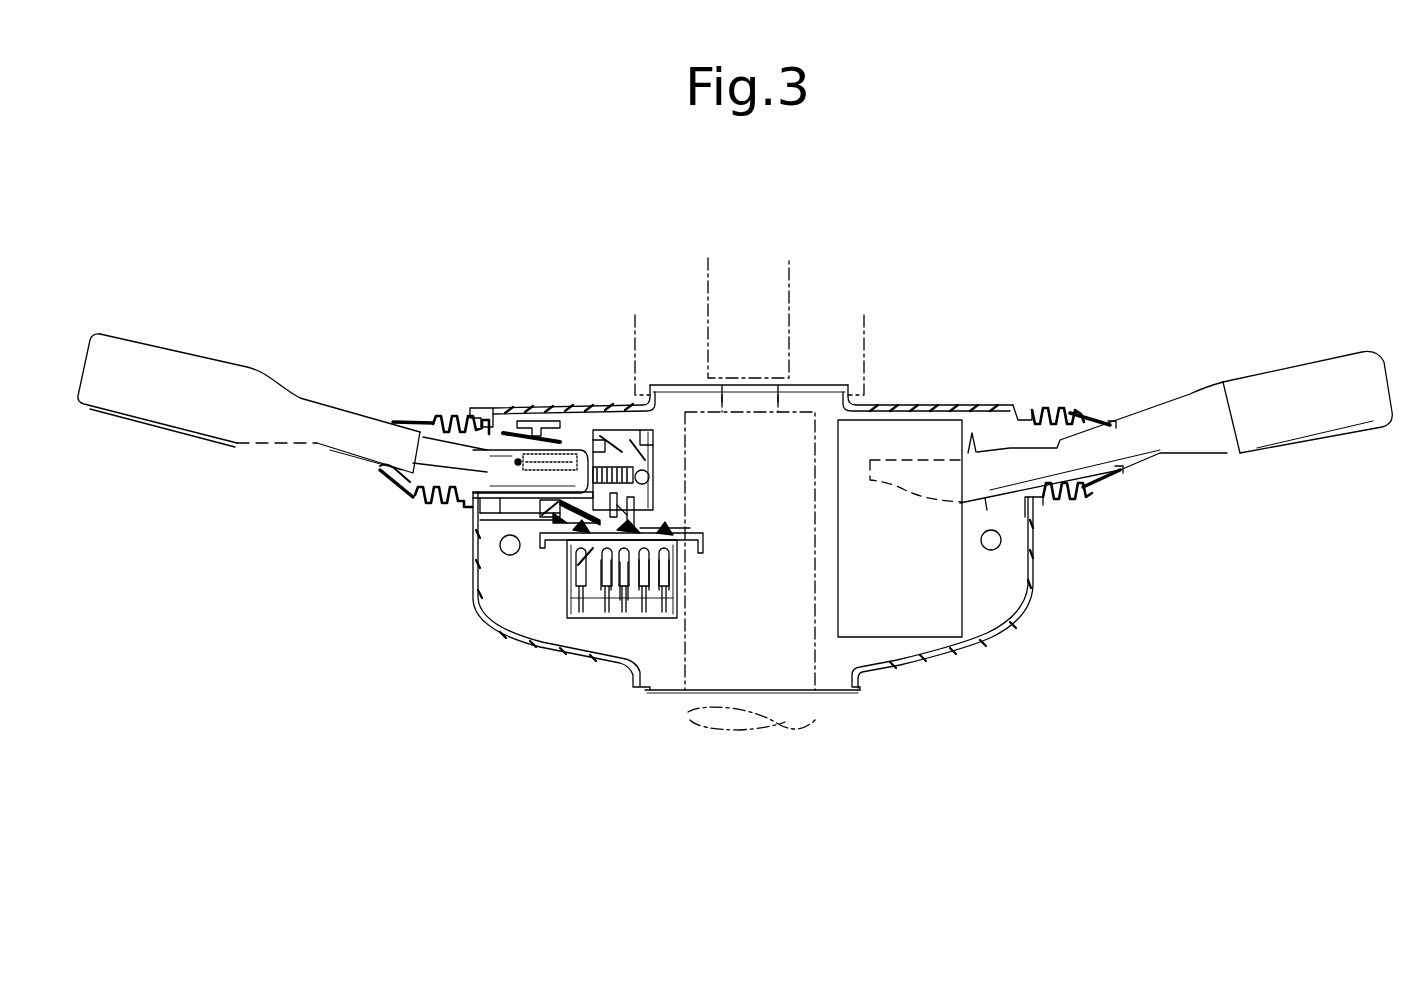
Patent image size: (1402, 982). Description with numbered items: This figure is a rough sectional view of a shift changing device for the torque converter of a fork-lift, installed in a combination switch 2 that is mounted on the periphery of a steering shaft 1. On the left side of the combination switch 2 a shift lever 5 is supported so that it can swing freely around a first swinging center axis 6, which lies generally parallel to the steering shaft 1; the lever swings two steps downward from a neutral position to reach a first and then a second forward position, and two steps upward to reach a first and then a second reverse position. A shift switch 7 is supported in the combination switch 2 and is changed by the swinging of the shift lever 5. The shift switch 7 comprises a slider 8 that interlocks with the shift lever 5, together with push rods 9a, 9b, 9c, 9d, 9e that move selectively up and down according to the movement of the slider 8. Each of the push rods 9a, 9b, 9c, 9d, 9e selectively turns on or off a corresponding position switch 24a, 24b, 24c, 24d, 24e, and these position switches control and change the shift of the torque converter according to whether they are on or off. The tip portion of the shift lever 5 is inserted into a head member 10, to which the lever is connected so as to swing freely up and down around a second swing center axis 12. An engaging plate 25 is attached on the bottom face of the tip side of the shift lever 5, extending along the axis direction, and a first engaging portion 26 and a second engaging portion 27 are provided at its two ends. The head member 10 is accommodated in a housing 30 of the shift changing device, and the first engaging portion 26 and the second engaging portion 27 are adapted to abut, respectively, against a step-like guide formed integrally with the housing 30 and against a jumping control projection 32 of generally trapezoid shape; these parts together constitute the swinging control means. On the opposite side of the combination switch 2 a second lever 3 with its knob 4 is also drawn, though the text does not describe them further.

The steering shaft 1 is at (806, 728).
The combination switch 2 is at (978, 388).
The right operating lever 3 is at (1192, 383).
The knob 4 is at (1302, 372).
The shift lever 5 is at (345, 410).
The first swinging center axis 6 is at (528, 473).
The shift switch 7 is at (555, 612).
The slider 8 is at (651, 540).
The push rod 9a is at (573, 563).
The push rod 9b is at (583, 575).
The push rod 9c is at (590, 585).
The push rod 9d is at (662, 572).
The push rod 9e is at (680, 560).
The head member 10 is at (600, 455).
The second swing center axis 12 is at (510, 483).
The position switch 24a is at (588, 622).
The position switch 24b is at (602, 622).
The position switch 24c is at (620, 622).
The position switch 24d is at (648, 620).
The position switch 24e is at (665, 616).
The engaging plate 25 is at (462, 440).
The first engaging portion 26 is at (415, 496).
The second engaging portion 27 is at (570, 483).
The housing 30 is at (500, 515).
The jumping control projection 32 is at (576, 522).